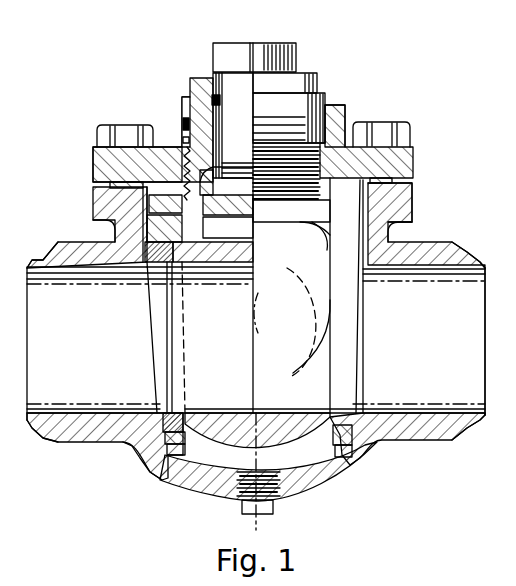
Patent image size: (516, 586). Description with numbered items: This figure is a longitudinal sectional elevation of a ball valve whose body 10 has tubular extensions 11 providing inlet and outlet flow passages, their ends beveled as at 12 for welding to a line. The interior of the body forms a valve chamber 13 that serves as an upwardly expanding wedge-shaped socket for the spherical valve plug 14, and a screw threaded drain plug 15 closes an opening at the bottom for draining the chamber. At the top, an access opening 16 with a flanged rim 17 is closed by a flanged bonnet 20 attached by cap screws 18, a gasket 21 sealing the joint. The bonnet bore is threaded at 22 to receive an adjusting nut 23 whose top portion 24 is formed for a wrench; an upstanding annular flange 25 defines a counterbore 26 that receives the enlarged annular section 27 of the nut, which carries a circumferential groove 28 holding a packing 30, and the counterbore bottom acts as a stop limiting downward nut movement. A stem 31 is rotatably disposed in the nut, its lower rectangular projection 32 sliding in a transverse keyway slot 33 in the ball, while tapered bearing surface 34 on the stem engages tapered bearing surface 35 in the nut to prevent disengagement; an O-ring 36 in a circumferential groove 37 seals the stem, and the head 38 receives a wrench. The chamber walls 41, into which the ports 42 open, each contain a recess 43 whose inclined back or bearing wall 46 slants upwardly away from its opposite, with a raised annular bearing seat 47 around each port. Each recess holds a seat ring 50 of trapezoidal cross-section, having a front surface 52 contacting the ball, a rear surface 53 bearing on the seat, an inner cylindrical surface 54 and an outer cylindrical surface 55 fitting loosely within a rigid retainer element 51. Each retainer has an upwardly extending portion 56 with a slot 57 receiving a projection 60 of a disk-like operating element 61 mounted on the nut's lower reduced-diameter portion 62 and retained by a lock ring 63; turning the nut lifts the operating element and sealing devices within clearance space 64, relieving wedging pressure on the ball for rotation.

The body 10 is at (368, 470).
The tubular extensions 11 is at (82, 435).
The beveling 12 is at (487, 425).
The valve chamber 13 is at (210, 458).
The valve plug 14 is at (262, 347).
The drain plug 15 is at (278, 502).
The access opening 16 is at (398, 228).
The flanged rim 17 is at (400, 205).
The bolts or cap screws 18 is at (405, 128).
The bonnet 20 is at (400, 163).
The gasket 21 is at (392, 181).
The threaded lower portion of bonnet bore 22 is at (345, 147).
The adjusting nut 23 is at (262, 113).
The top portion of adjusting nut 24 is at (312, 88).
The upstanding annular flange 25 is at (318, 138).
The counterbore 26 is at (340, 115).
The enlarged annular section 27 is at (326, 100).
The circumferential groove 28 is at (186, 120).
The packing or gasket 30 is at (184, 127).
The stem 31 is at (250, 43).
The rectangular projection 32 is at (240, 230).
The transverse keyway slot 33 is at (187, 275).
The tapered bearing surface 34 is at (232, 172).
The tapered bearing surface 35 is at (226, 182).
The O-ring 36 is at (220, 100).
The circumferential groove 37 is at (233, 125).
The stem head 38 is at (284, 60).
The walls 41 is at (187, 387).
The ports 42 is at (155, 366).
The recess 43 is at (173, 457).
The back or bearing wall 46 is at (152, 343).
The annular bearing seat 47 is at (157, 467).
The seat ring 50 is at (157, 305).
The retainer element 51 is at (343, 280).
The front surface 52 is at (182, 290).
The rear surface 53 is at (143, 263).
The inner cylindrical surface 54 is at (158, 263).
The outer cylindrical surface 55 is at (204, 228).
The upwardly extending portion 56 is at (157, 232).
The slot 57 is at (152, 190).
The projection 60 is at (153, 203).
The operating element 61 is at (282, 207).
The lower reduced-diameter portion 62 is at (204, 205).
The lock ring 63 is at (313, 224).
The clearance space 64 is at (203, 187).